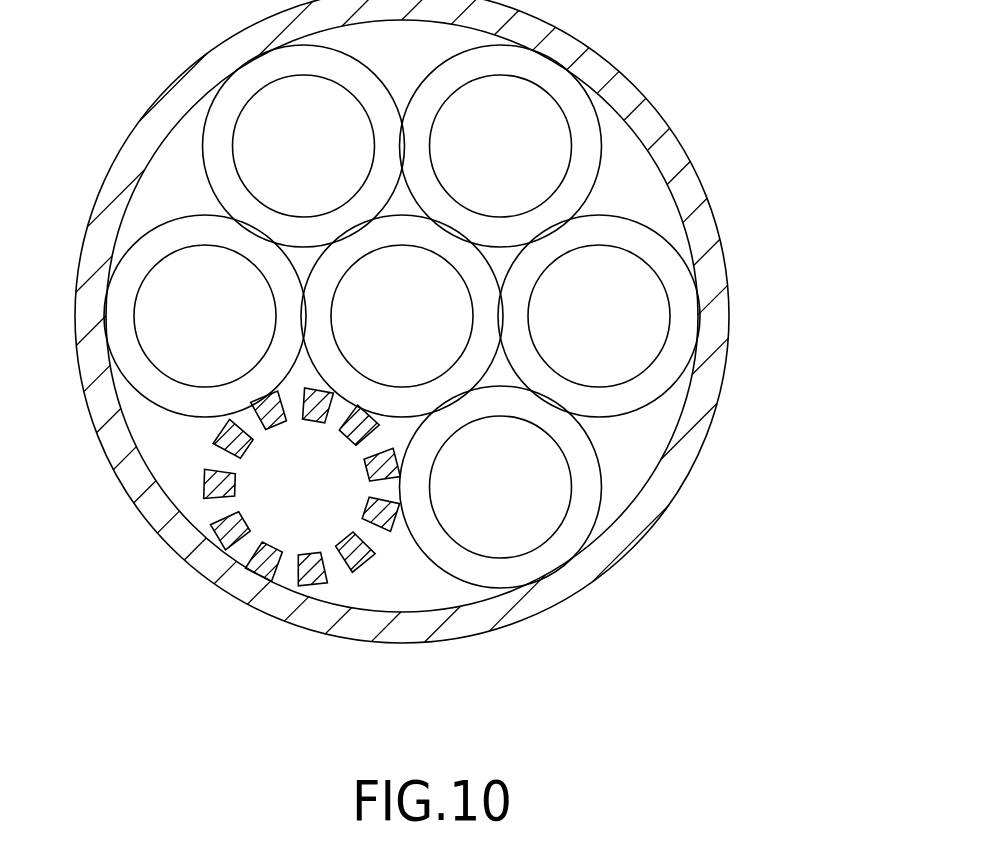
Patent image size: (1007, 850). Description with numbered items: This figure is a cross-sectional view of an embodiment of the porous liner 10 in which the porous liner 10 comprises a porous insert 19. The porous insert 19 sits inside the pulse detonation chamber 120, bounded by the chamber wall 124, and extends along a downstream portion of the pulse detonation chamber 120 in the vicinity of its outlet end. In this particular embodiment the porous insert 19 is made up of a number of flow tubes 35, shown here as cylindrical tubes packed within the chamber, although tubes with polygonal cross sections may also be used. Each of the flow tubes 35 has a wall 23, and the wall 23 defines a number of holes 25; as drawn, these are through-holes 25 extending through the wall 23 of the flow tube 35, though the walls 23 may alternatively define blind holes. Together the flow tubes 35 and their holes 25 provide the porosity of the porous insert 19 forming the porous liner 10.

The porous liner 10 is at (494, 641).
The porous insert 19 is at (378, 570).
The pulse detonation chamber 120 is at (487, 321).
The chamber wall 124 is at (683, 397).
The flow tubes 35 is at (518, 570).
The wall 23 is at (224, 550).
The holes 25 is at (243, 552).